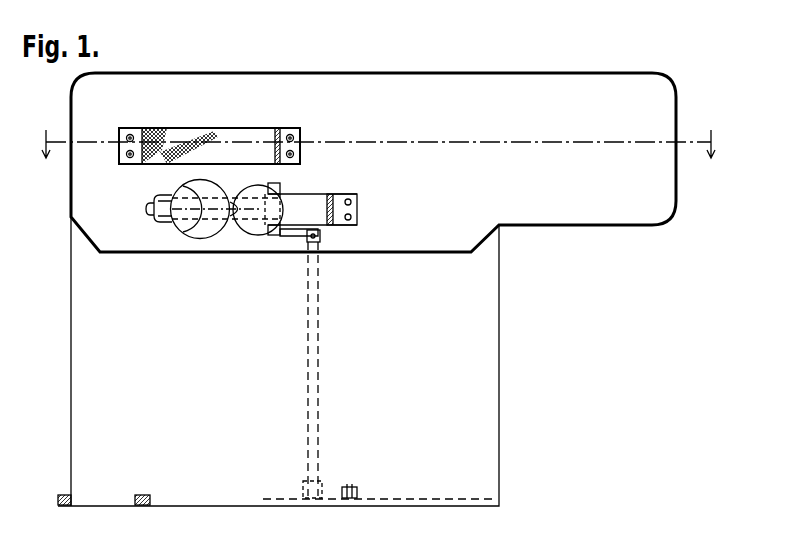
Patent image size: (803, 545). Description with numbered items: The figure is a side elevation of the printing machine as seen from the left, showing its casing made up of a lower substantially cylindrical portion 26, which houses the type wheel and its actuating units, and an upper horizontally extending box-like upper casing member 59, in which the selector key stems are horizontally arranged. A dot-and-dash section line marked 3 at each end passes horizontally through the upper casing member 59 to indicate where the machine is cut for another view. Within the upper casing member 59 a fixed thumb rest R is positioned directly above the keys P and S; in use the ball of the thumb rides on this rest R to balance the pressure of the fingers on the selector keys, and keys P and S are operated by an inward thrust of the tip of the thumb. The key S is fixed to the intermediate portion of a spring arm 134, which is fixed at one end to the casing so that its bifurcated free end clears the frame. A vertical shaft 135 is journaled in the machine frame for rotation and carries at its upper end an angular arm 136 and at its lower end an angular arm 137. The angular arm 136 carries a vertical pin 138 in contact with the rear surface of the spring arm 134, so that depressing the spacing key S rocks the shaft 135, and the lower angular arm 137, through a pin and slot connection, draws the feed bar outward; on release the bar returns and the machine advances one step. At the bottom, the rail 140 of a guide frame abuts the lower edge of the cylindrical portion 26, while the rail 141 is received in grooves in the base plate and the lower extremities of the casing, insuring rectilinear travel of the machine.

The upper casing member 59 is at (670, 116).
The cylindrical portion of casing 26 is at (490, 414).
The section line 3- 3 is at (377, 155).
The thumb rest R is at (229, 134).
The key P is at (204, 233).
The spacing key S is at (250, 233).
The vertical pin 138 is at (281, 186).
The spring arm 134 is at (348, 182).
The angular arm 136 is at (290, 243).
The vertical shaft 135 is at (318, 347).
The angular arm 137 is at (327, 492).
The rail 140 is at (63, 506).
The rail 141 is at (140, 506).